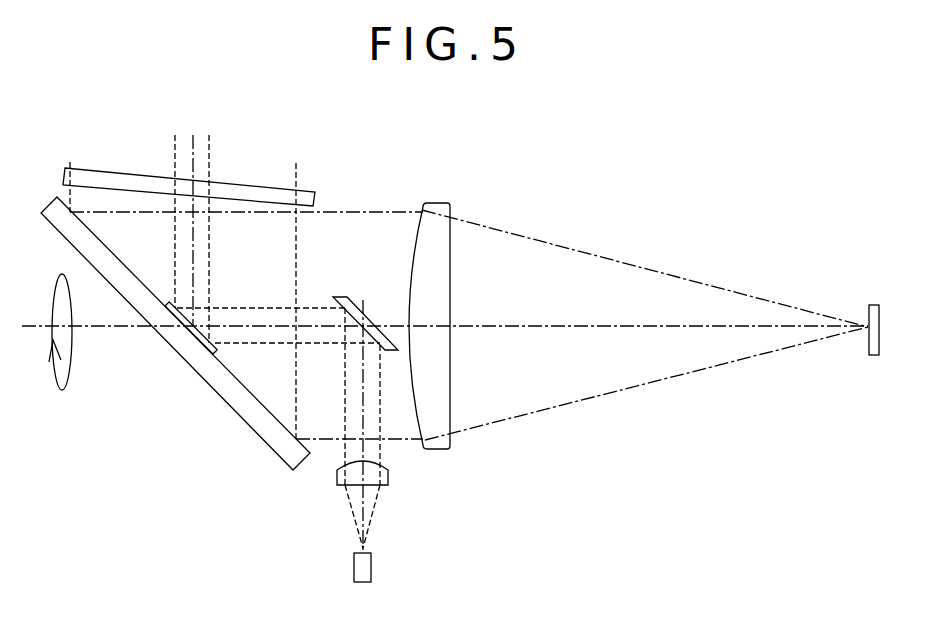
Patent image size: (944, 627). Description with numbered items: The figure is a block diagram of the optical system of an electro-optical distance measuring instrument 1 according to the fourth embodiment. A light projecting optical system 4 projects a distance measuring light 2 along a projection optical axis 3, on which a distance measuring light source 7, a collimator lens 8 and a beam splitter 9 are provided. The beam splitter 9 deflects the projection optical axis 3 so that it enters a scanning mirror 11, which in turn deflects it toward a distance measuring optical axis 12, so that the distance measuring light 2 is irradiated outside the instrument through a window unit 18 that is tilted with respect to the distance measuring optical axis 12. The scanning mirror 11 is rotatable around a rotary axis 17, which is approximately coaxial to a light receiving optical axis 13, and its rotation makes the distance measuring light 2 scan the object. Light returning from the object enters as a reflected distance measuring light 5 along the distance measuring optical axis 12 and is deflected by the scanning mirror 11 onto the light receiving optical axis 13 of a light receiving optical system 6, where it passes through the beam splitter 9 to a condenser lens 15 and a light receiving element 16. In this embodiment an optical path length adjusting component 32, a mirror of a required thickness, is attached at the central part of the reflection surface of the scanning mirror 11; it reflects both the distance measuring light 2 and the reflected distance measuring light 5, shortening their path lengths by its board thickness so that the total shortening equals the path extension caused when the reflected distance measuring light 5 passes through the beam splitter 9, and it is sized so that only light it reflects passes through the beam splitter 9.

The electro-optical distance measuring instrument 1 is at (555, 130).
The distance measuring light 2 is at (210, 153).
The projection optical axis 3 is at (363, 383).
The light projecting optical system 4 is at (324, 522).
The reflected distance measuring light 5 is at (626, 265).
The light receiving optical system 6 is at (470, 467).
The distance measuring light source 7 is at (372, 570).
The collimator lens 8 is at (337, 476).
The beam splitter 9 is at (362, 297).
The scanning mirror 11 is at (223, 403).
The distance measuring optical axis 12 is at (193, 155).
The light receiving optical axis 13 is at (513, 326).
The condenser lens 15 is at (441, 203).
The light receiving element 16 is at (876, 305).
The rotary axis 17 is at (22, 326).
The window unit 18 is at (247, 187).
The optical path length adjusting component 32 is at (205, 332).